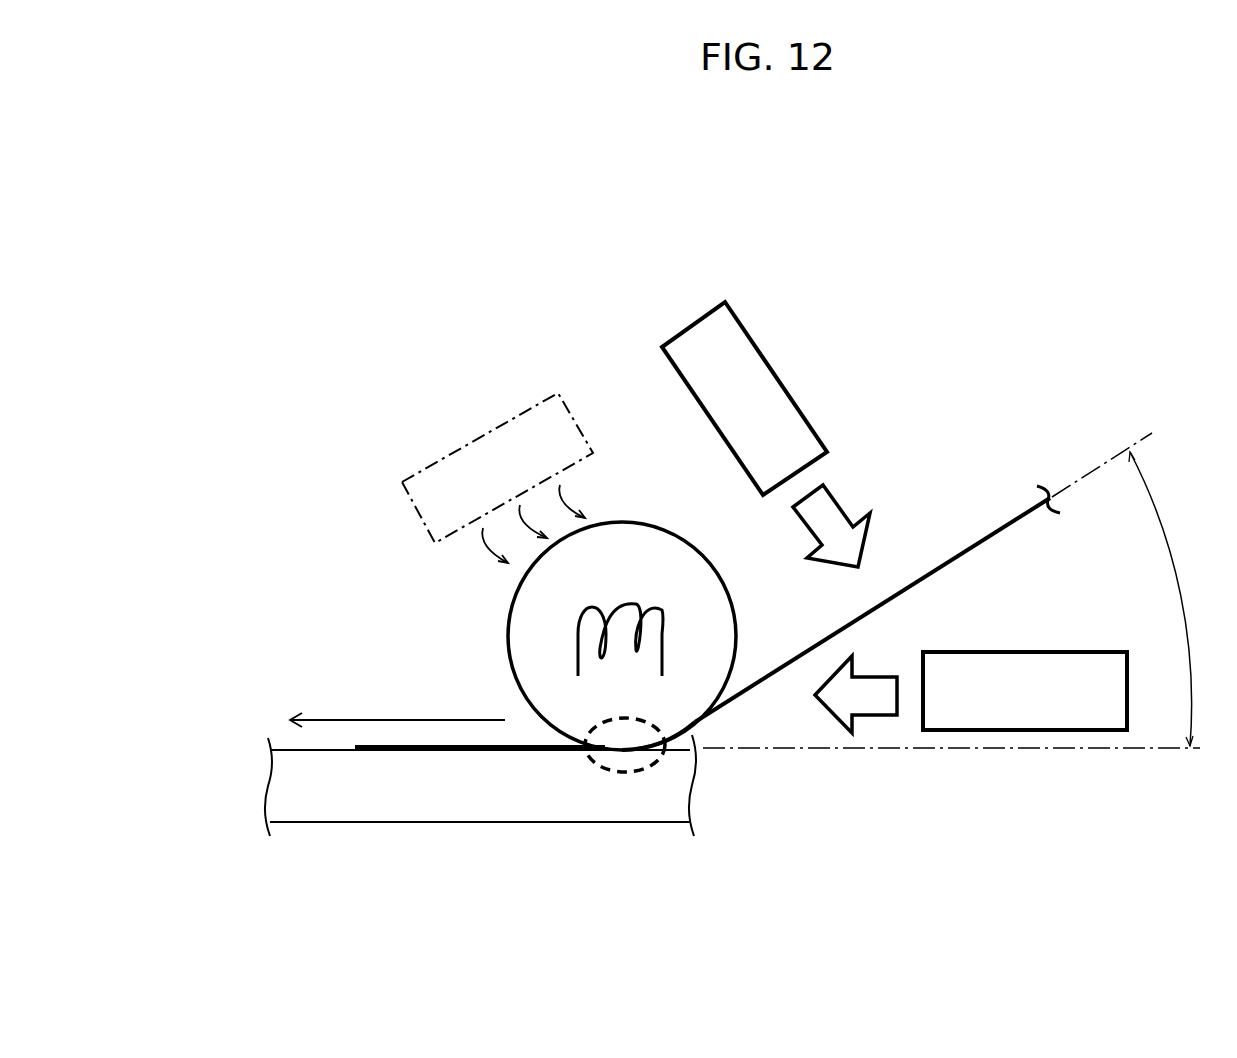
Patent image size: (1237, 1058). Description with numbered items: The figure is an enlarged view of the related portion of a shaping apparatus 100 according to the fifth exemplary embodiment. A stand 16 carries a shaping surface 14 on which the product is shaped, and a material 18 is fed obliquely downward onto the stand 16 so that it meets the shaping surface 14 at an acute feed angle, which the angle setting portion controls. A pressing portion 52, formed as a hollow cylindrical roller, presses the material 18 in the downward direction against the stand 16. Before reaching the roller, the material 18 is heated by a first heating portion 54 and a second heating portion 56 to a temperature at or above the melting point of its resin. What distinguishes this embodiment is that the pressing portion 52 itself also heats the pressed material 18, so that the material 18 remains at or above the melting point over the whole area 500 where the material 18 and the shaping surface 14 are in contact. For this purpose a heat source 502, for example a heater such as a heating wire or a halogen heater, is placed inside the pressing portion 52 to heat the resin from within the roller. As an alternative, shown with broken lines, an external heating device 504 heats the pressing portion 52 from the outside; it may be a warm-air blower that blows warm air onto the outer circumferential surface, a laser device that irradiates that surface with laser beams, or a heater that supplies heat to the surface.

The shaping apparatus 100 is at (305, 292).
The shaping surface 14 is at (290, 747).
The stand 16 is at (607, 822).
The material 18 is at (993, 535).
The pressing portion 52 is at (643, 503).
The first heating portion 54 is at (695, 315).
The second heating portion 56 is at (1010, 732).
The area 500 is at (662, 768).
The heat source 502 is at (577, 645).
The external heating device 504 is at (483, 435).